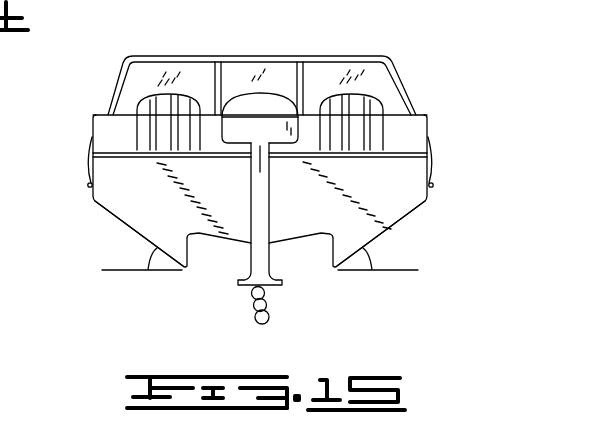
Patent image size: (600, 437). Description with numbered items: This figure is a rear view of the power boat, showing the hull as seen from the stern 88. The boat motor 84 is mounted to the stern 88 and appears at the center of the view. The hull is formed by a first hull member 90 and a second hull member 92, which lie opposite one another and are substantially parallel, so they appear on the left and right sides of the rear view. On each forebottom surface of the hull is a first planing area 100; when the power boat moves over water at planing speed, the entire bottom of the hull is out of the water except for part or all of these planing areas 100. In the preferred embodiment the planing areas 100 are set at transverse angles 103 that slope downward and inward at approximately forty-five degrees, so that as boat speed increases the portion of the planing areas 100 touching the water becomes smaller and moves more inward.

The boat motor 84 is at (268, 100).
The stern 88 is at (152, 198).
The first hull member 90 is at (88, 185).
The second hull member 92 is at (433, 185).
The first planing area 100 is at (114, 214).
The transverse angle 103 is at (147, 254).